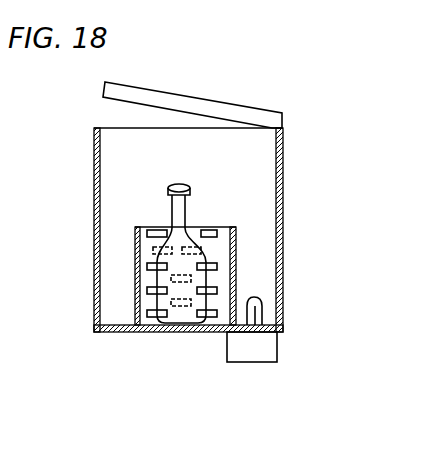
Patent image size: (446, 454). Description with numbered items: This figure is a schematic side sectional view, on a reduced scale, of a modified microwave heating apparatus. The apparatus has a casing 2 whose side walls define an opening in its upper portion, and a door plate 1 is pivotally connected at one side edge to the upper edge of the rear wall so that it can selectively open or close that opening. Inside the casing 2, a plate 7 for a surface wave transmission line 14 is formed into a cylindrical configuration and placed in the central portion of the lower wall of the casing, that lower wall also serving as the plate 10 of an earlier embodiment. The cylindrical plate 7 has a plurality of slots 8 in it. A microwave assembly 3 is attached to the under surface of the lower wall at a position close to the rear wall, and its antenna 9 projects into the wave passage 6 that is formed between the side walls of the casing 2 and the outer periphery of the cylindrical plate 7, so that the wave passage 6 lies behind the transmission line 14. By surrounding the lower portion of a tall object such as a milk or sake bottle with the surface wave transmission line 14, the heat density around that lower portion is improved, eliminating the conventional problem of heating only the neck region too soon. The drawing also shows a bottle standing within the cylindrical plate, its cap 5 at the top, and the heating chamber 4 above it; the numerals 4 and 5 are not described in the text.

The door plate 1 is at (200, 100).
The casing 2 is at (94, 206).
The microwave assembly 3 is at (250, 352).
The chamber 4 is at (246, 178).
The cap 5 is at (168, 190).
The wave passage 6 is at (188, 276).
The plate 7 is at (197, 226).
The slots 8 is at (212, 315).
The antenna 9 is at (263, 300).
The plate 10 is at (117, 332).
The surface wave transmission line 14 is at (238, 231).